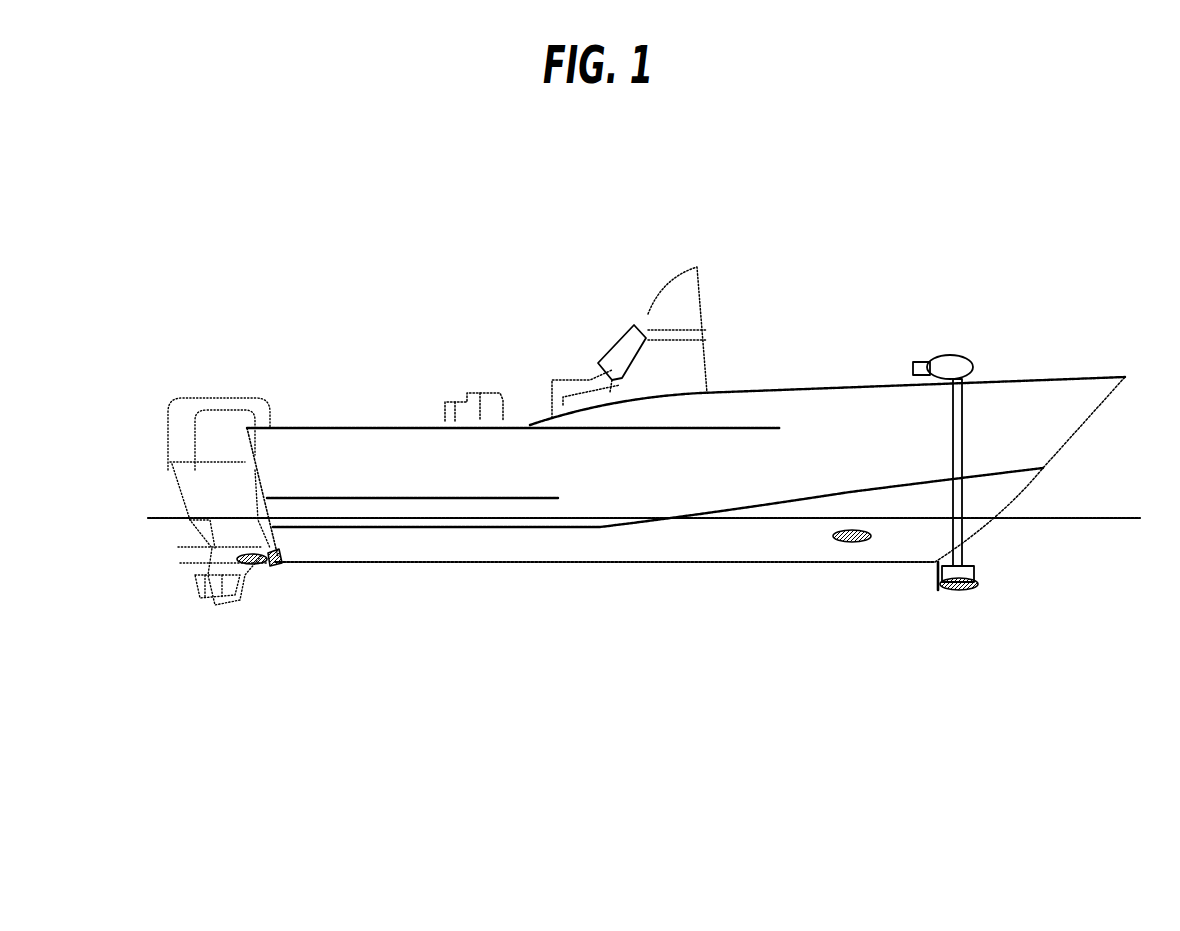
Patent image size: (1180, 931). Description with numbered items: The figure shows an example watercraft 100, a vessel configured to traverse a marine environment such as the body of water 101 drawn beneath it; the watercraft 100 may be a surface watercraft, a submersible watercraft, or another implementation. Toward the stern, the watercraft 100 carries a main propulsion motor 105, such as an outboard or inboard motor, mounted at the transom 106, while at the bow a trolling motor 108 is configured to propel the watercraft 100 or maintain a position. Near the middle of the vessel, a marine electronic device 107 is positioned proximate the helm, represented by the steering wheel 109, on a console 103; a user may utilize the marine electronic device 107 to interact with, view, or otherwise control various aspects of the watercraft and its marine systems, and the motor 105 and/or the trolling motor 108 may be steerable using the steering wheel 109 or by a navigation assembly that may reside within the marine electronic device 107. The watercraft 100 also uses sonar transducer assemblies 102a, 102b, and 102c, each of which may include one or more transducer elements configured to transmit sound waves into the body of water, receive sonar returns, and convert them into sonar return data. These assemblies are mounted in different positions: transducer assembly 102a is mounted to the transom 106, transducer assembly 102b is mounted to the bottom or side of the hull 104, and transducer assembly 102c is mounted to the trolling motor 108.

The watercraft 100 is at (835, 388).
The body of water 101 is at (633, 647).
The sonar transducer assembly 102a is at (260, 562).
The sonar transducer assembly 102b is at (850, 545).
The sonar transducer assembly 102c is at (962, 592).
The console 103 is at (665, 357).
The hull 104 is at (500, 555).
The main propulsion motor 105 is at (197, 397).
The transom 106 is at (255, 455).
The marine electronic device 107 is at (625, 332).
The trolling motor 108 is at (970, 572).
The steering wheel 109 is at (548, 378).